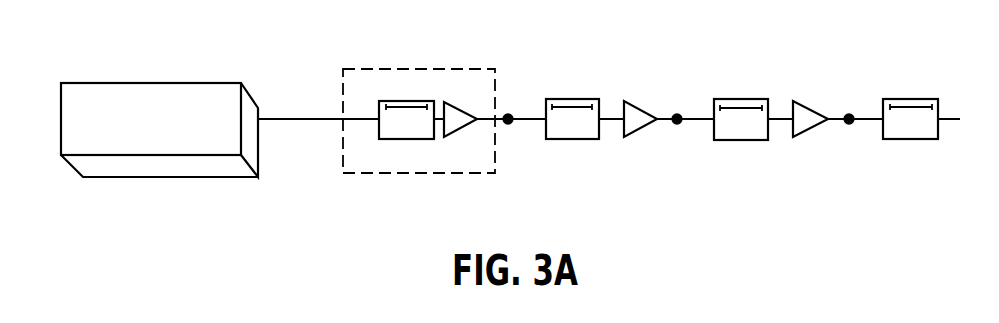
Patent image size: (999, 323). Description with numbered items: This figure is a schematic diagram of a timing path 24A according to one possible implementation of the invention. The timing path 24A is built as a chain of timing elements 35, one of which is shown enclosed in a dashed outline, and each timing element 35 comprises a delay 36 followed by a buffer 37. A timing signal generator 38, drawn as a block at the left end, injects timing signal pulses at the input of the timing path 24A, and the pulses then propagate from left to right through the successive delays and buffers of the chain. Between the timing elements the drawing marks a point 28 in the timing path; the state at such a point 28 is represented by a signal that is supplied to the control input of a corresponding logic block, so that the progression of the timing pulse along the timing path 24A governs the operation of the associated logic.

The timing path 24A is at (510, 46).
The point in timing path 28 is at (508, 114).
The timing element 35 is at (363, 173).
The delay 36 is at (405, 139).
The buffer 37 is at (458, 128).
The timing signal generator 38 is at (170, 168).